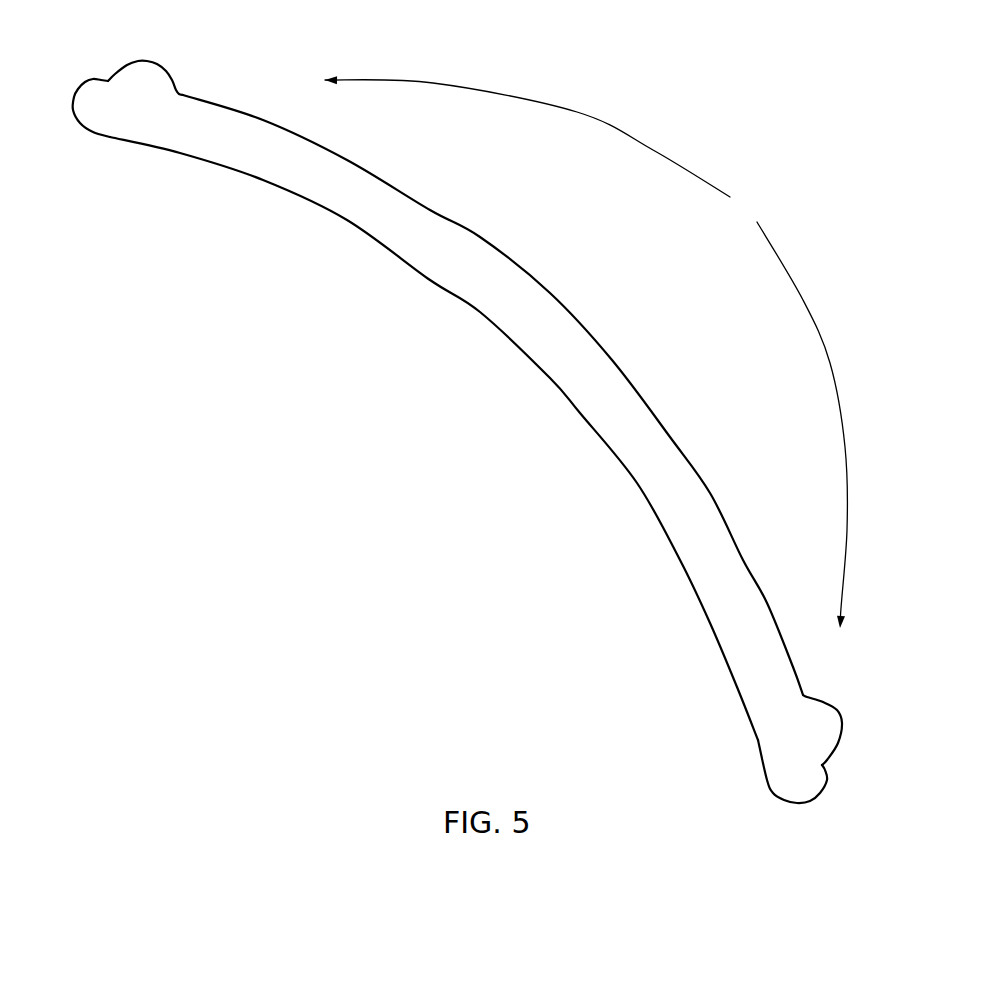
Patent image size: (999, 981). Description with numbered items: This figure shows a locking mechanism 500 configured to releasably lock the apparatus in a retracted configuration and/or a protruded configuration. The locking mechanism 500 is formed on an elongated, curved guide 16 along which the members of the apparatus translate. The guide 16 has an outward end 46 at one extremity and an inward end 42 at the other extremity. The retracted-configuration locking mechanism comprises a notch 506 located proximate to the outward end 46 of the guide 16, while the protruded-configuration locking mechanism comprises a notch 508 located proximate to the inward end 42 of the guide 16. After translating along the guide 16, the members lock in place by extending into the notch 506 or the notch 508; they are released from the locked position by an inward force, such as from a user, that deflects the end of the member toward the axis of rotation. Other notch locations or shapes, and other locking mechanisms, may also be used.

The guide 16 is at (450, 417).
The inward end 42 is at (749, 786).
The outward end 46 is at (96, 153).
The locking mechanism 500 is at (586, 352).
The notch 506 is at (172, 55).
The notch 508 is at (855, 719).